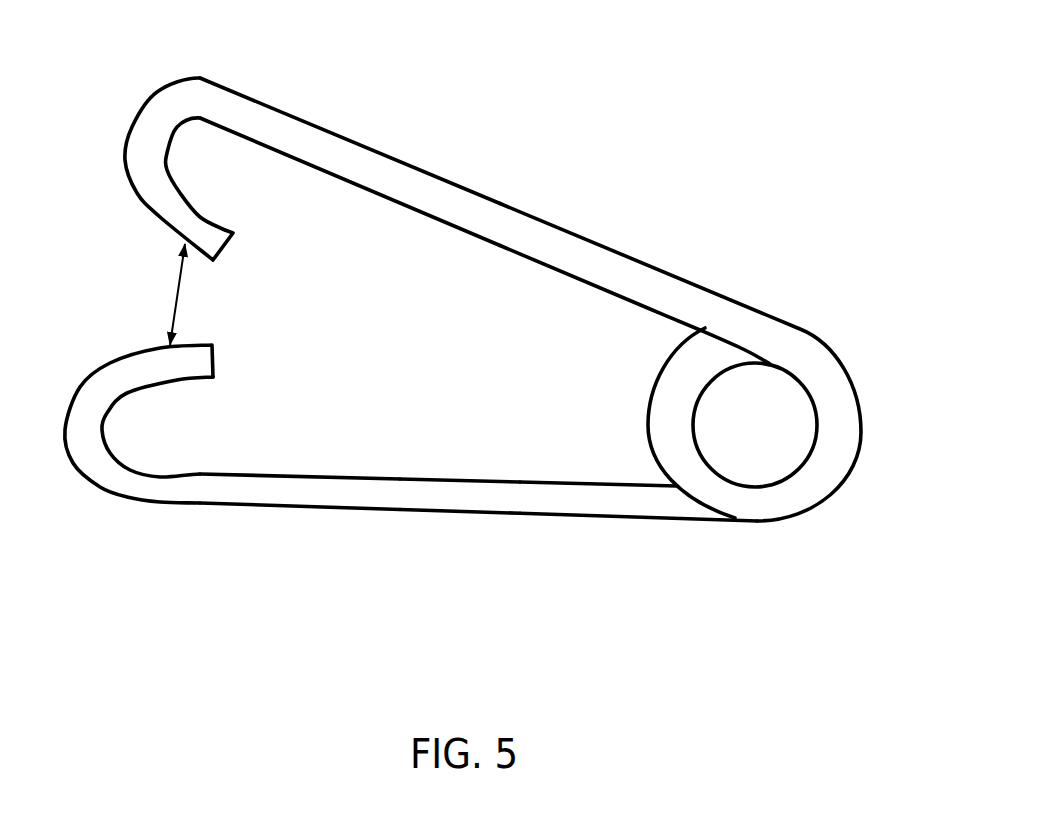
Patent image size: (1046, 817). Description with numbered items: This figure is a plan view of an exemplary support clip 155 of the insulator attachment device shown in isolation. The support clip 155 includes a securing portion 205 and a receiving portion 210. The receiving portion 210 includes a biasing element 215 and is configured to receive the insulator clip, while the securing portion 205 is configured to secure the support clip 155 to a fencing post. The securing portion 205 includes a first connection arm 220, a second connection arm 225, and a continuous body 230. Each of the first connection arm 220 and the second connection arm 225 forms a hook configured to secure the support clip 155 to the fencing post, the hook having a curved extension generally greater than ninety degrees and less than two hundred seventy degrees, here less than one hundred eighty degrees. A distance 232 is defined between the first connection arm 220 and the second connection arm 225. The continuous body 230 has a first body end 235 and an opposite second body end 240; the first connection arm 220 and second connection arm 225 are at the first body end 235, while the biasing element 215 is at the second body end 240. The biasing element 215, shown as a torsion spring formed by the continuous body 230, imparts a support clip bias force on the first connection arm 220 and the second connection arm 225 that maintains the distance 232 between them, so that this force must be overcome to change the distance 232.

The support clip 155 is at (739, 90).
The securing portion 205 is at (234, 509).
The receiving portion 210 is at (613, 519).
The biasing element 215 is at (775, 492).
The first connection arm 220 is at (129, 499).
The second connection arm 225 is at (248, 93).
The continuous body 230 is at (460, 493).
The distance 232 is at (175, 310).
The first body end 235 is at (313, 122).
The second body end 240 is at (699, 285).